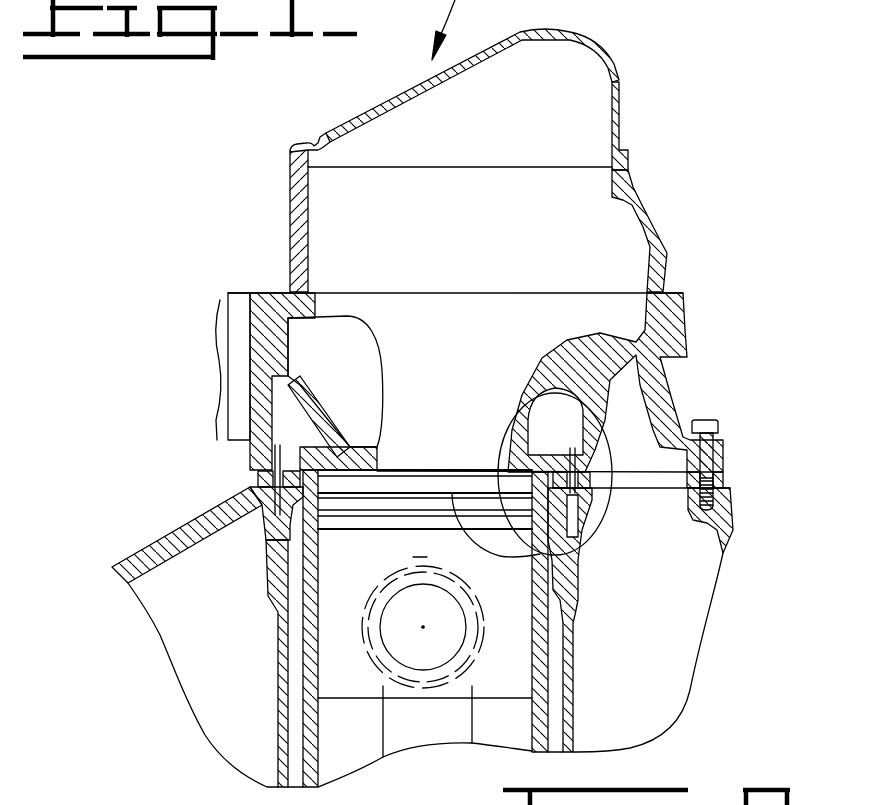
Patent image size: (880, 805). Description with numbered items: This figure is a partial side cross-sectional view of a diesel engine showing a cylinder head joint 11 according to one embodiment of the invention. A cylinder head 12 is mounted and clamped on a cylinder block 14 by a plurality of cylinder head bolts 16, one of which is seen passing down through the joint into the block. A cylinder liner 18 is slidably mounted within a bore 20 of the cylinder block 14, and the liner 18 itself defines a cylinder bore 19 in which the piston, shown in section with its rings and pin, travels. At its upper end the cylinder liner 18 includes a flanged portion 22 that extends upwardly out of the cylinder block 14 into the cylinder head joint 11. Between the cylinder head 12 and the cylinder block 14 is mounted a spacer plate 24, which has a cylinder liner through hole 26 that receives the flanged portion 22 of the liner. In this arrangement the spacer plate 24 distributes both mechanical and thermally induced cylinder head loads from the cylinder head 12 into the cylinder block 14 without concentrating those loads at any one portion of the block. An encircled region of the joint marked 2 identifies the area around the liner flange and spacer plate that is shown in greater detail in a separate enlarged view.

The section line for FIG. 2 is at (490, 497).
The cylinder head joint 11 is at (762, 454).
The cylinder head 12 is at (683, 330).
The cylinder block 14 is at (733, 527).
The cylinder head bolts 16 is at (707, 420).
The cylinder liner 18 is at (277, 580).
The cylinder bore 19 is at (537, 673).
The bore 20 is at (302, 490).
The flanged portion 22 is at (320, 470).
The spacer plate 24 is at (258, 475).
The cylinder liner through hole 26 is at (481, 414).